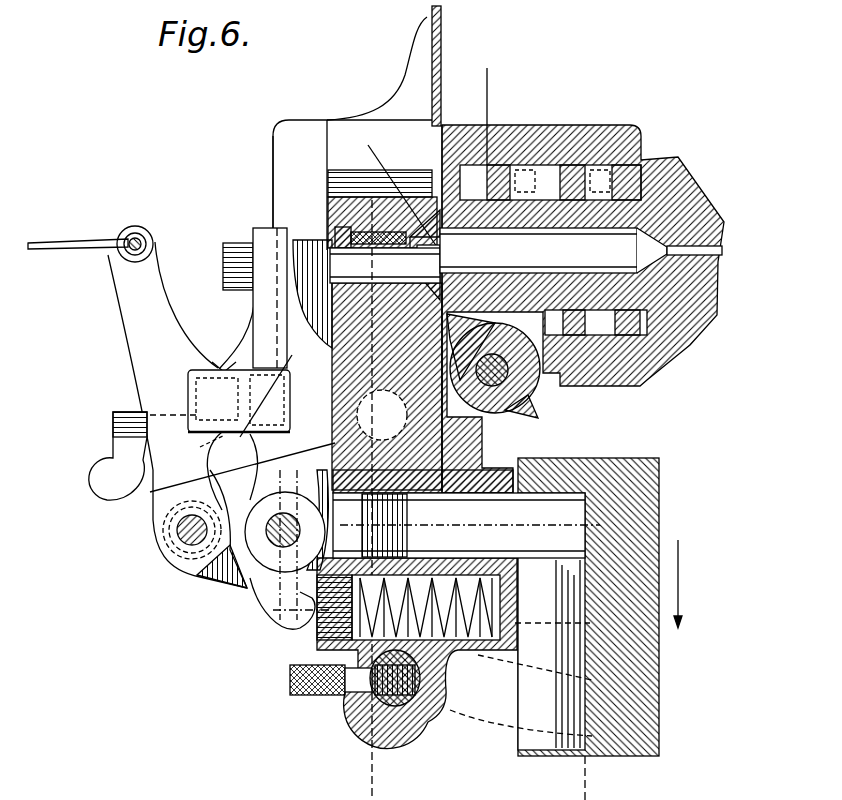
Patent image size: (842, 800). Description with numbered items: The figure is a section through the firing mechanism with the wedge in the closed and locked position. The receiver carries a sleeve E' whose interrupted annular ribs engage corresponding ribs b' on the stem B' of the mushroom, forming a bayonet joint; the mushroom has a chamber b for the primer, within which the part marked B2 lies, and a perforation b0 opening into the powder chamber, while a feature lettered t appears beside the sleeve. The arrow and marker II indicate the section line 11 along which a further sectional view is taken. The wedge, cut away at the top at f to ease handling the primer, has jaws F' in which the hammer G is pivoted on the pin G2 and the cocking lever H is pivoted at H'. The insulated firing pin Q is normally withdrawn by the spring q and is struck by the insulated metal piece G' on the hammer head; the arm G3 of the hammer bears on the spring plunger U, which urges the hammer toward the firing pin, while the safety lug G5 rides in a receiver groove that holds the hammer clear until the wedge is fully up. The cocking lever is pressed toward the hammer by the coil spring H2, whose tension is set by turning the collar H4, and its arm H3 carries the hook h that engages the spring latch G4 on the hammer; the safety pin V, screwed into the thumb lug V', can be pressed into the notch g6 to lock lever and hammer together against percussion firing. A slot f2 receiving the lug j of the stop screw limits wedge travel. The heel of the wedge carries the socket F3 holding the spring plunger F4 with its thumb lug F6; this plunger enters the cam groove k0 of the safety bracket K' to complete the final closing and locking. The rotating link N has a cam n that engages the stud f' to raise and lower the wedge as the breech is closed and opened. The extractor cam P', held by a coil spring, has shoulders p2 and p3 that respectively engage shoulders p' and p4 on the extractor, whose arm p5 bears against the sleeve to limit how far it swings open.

The section line II is at (443, 75).
The insulated firing pin Q is at (347, 232).
The cut-away at top of wedge f is at (382, 191).
The spring q is at (415, 230).
The stem of the mushroom B' is at (583, 309).
The sleeve E' is at (550, 147).
The tooth t is at (617, 168).
The ribs b' is at (503, 133).
The rod B2 is at (553, 250).
The perforation b0 is at (703, 240).
The chamber b is at (685, 321).
The shoulder on the extractor p' is at (493, 329).
The section line 11— 11 is at (497, 441).
The shoulder of the extractor cam p2 is at (656, 392).
The extractor cam P' is at (628, 393).
The shoulder of the extractor cam p3 is at (585, 388).
The shoulder on the extractor p4 is at (548, 385).
The arm p5 is at (540, 400).
The rotating link N is at (647, 518).
The cam n is at (576, 562).
The socket F3 is at (417, 615).
The stud f' is at (466, 525).
The cam groove k0 is at (521, 695).
The safety bracket K' is at (471, 762).
The arm of the hammer G3 is at (295, 622).
The spring plunger U is at (316, 640).
The spring plunger F4 is at (362, 722).
The thumb lug F6 is at (298, 697).
The cocking lever H is at (163, 421).
The collar H4 is at (45, 243).
The pivot of the cocking lever H' is at (160, 530).
The coil spring H2 is at (170, 560).
The jaws F' is at (218, 583).
The hammer G is at (206, 305).
The insulated metal piece G' is at (275, 353).
The safety lug G5 is at (248, 337).
The slot f2 is at (337, 313).
The plunger (spring latch) G4 is at (197, 361).
The arm of the cocking lever H3 is at (239, 401).
The safety pin V is at (217, 400).
The thumb lug V' is at (101, 456).
The hook h is at (242, 432).
The notch g6 is at (207, 440).
The lug j is at (285, 524).
The pin G2 is at (273, 547).